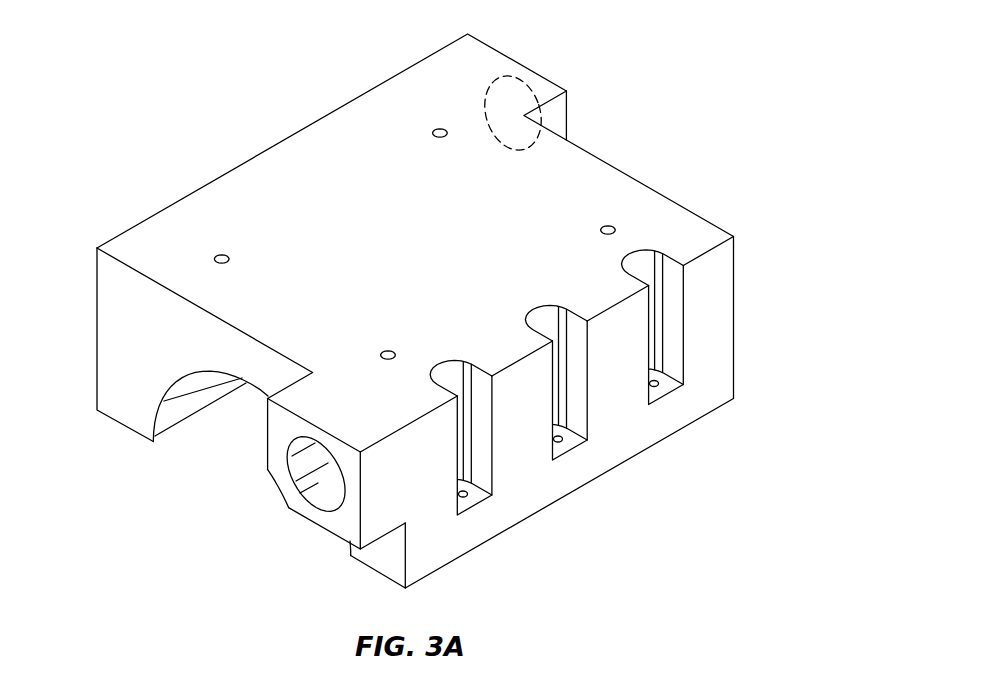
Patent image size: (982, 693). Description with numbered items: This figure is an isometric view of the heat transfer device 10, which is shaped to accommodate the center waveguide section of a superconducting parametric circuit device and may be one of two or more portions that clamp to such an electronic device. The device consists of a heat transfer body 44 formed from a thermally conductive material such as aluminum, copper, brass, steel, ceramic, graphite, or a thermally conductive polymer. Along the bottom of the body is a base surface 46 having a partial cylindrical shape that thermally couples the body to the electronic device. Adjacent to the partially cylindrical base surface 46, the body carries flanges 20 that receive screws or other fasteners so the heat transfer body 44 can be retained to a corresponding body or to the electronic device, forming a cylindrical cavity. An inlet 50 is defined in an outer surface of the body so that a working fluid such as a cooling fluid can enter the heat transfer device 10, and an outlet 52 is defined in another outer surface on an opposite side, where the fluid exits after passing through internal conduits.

The heat transfer device 10 is at (686, 85).
The flanges 20 is at (573, 452).
The heat transfer body 44 is at (227, 173).
The base surface 46 is at (188, 402).
The inlet 50 is at (313, 507).
The outlet 52 is at (518, 82).